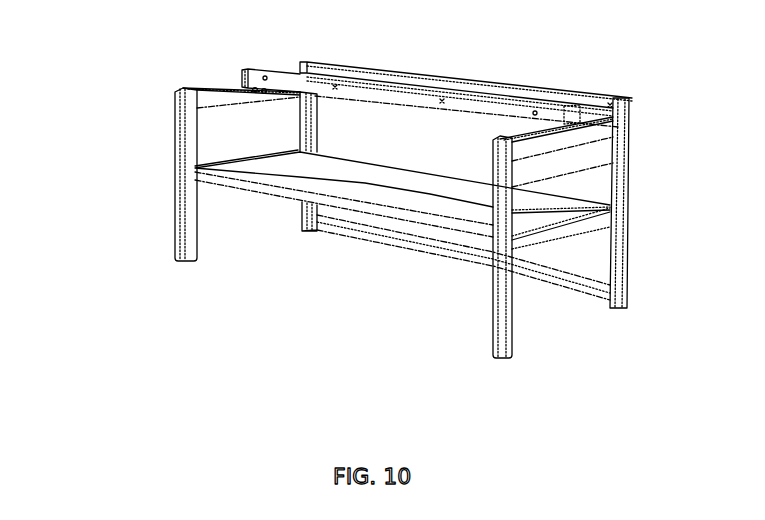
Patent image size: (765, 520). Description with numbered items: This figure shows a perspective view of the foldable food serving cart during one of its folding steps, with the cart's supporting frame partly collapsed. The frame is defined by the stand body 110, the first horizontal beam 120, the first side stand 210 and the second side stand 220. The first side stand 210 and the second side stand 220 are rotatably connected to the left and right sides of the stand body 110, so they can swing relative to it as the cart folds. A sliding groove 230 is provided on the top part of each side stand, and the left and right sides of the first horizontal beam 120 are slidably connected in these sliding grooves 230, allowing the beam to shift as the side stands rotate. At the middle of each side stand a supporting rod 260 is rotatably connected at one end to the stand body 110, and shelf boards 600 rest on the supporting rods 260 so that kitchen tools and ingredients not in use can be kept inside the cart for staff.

The stand body 110 is at (498, 97).
The first horizontal beam 120 is at (283, 92).
The first side stand 210 is at (193, 205).
The second side stand 220 is at (508, 283).
The sliding grooves 230 is at (202, 93).
The supporting rod 260 is at (543, 245).
The shelf boards 600 is at (397, 208).